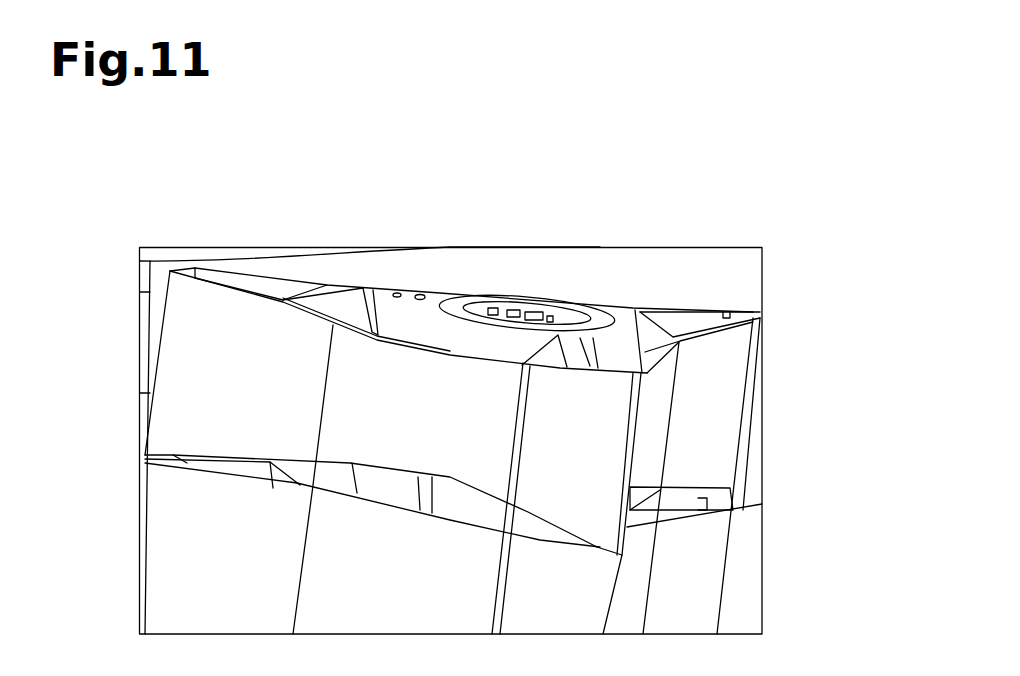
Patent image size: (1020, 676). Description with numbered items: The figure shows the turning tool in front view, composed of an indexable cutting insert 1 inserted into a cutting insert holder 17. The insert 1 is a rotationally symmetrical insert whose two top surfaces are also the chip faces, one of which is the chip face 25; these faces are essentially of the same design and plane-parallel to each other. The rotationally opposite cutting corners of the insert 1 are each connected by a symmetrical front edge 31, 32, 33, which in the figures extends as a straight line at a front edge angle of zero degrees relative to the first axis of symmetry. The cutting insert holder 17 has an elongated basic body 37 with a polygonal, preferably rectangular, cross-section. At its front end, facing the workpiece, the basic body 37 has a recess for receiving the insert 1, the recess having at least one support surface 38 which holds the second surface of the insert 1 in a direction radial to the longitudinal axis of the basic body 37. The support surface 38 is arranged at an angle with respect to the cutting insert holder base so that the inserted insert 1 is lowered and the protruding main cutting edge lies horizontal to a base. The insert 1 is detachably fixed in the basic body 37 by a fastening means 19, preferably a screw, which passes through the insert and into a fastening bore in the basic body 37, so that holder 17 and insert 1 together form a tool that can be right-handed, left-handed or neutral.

The indexable cutting insert 1 is at (146, 306).
The cutting insert holder 17 is at (222, 602).
The fastening means 19 is at (537, 297).
The chip face 25 is at (432, 298).
The front edge 31 is at (633, 463).
The front edge 32 is at (750, 355).
The front edge 33 is at (140, 393).
The basic body 37 is at (740, 578).
The support surface 38 is at (273, 488).